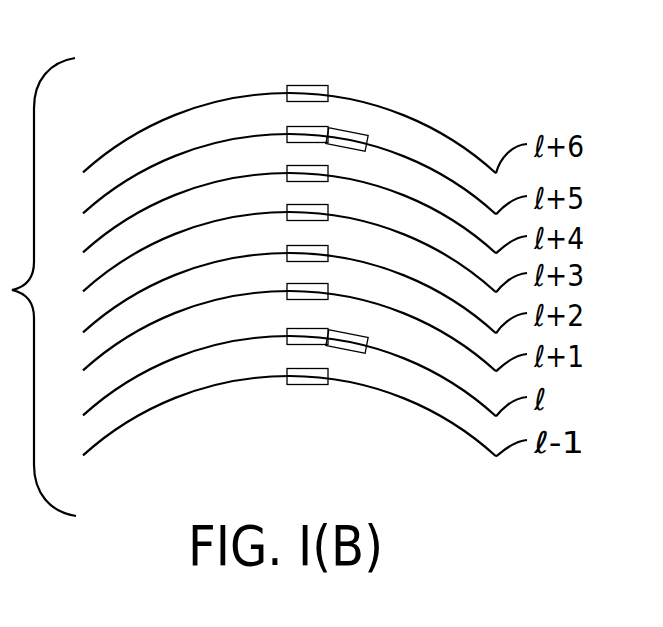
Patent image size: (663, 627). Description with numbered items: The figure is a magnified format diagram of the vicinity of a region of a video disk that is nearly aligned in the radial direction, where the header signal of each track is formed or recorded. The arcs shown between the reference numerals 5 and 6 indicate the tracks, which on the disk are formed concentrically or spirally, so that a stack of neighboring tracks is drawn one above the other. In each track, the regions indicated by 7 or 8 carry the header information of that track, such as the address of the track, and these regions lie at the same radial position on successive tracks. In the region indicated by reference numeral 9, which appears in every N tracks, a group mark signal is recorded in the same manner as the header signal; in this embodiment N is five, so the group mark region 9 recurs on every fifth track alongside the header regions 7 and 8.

The tracks 5 is at (437, 128).
The tracks 6 is at (388, 393).
The header information region 7 is at (298, 86).
The header information region 8 is at (320, 128).
The group mark signal region 9 is at (358, 134).